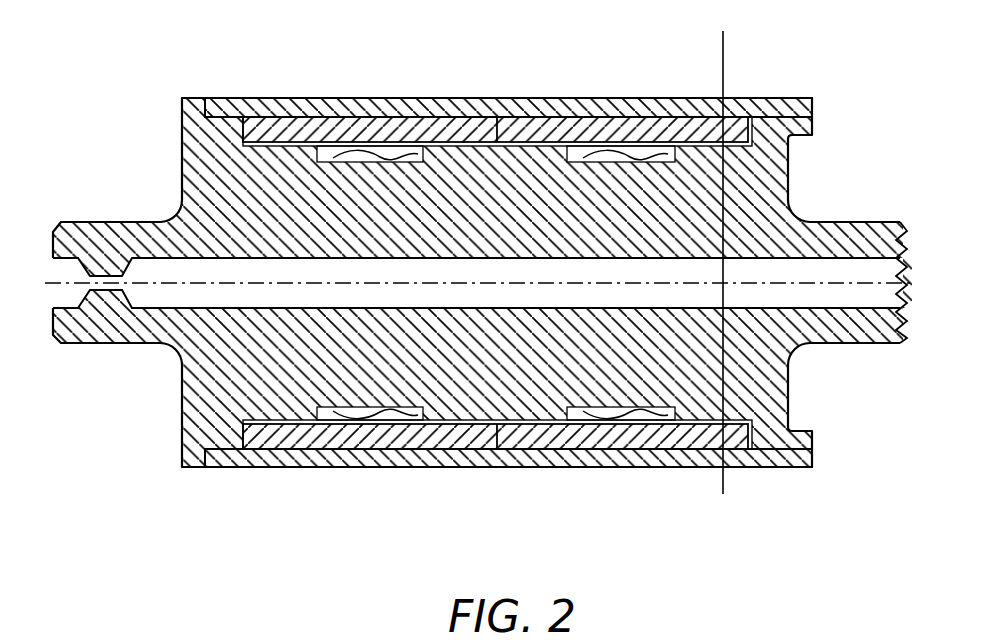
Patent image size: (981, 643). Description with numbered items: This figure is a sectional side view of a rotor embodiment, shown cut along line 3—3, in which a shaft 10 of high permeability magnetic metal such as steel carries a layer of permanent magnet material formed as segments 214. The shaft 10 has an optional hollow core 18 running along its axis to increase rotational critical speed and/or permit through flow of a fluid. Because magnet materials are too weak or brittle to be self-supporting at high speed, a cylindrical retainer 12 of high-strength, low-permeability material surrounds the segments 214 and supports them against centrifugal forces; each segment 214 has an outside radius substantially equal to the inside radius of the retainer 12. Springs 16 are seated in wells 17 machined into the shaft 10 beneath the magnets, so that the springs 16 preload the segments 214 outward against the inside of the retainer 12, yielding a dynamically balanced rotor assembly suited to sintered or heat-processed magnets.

The shaft 10 is at (96, 222).
The retainer 12 is at (322, 98).
The segments of permanent magnet material 214 is at (563, 118).
The springs 16 is at (412, 150).
The wells 17 is at (369, 410).
The hollow core 18 is at (352, 295).
The line 3— 3 is at (703, 494).